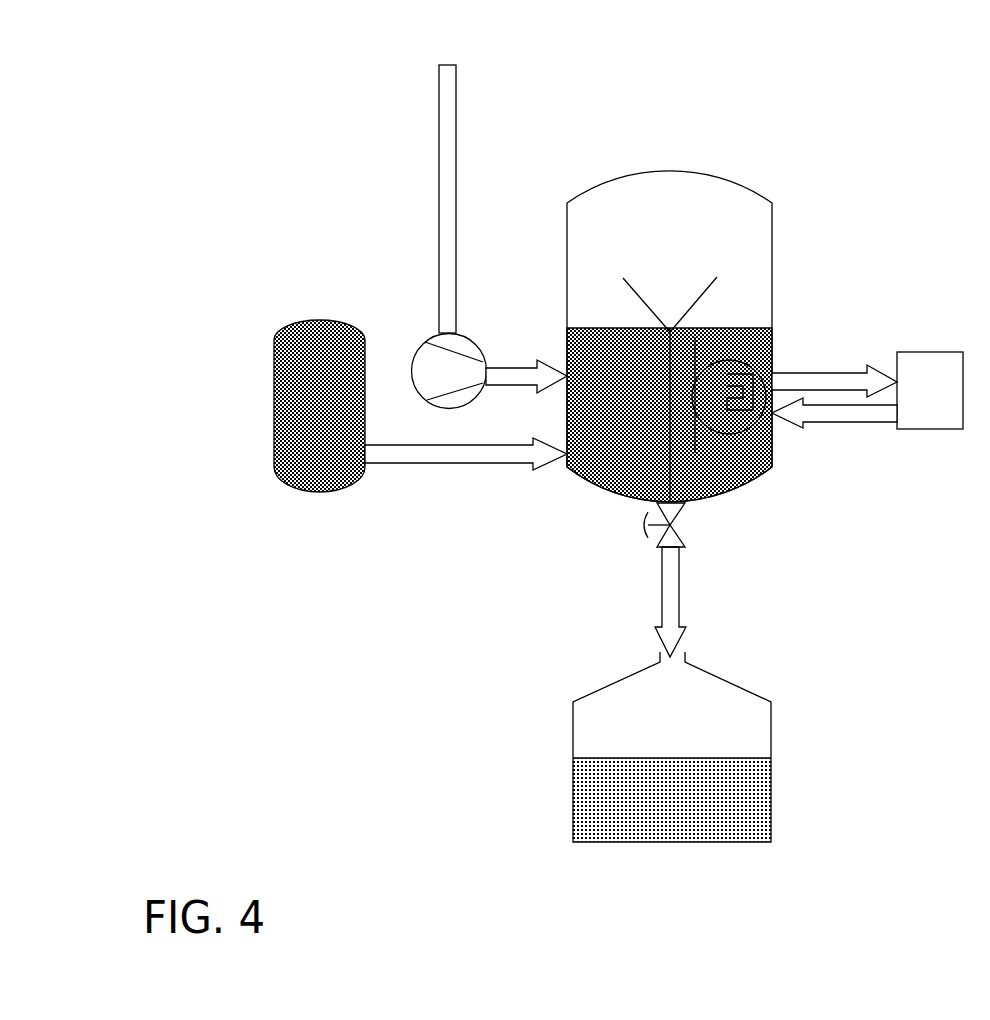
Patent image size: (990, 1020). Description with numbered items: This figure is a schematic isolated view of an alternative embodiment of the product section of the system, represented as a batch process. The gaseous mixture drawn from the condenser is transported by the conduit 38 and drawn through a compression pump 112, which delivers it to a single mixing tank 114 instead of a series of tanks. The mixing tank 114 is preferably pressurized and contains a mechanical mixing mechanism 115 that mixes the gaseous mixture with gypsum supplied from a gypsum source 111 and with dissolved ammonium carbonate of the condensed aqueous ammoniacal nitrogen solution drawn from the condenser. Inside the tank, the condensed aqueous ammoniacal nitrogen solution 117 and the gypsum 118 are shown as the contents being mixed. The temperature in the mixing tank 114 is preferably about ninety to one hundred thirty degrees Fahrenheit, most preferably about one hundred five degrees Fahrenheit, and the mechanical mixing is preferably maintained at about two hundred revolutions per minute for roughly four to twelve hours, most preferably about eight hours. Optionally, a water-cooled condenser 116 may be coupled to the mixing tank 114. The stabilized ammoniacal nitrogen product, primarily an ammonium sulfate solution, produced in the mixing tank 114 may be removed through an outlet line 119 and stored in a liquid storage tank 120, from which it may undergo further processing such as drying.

The conduit 38 is at (439, 157).
The gypsum source 111 is at (337, 409).
The compression pump 112 is at (472, 343).
The mixing tank 114 is at (687, 239).
The mechanical mixing mechanism 115 is at (637, 297).
The water-cooled condenser 116 is at (949, 404).
The condensed aqueous ammoniacal nitrogen solution 117 is at (635, 409).
The gypsum 118 is at (647, 479).
The discharge line with valve 119 is at (678, 603).
The liquid storage tank 120 is at (692, 746).